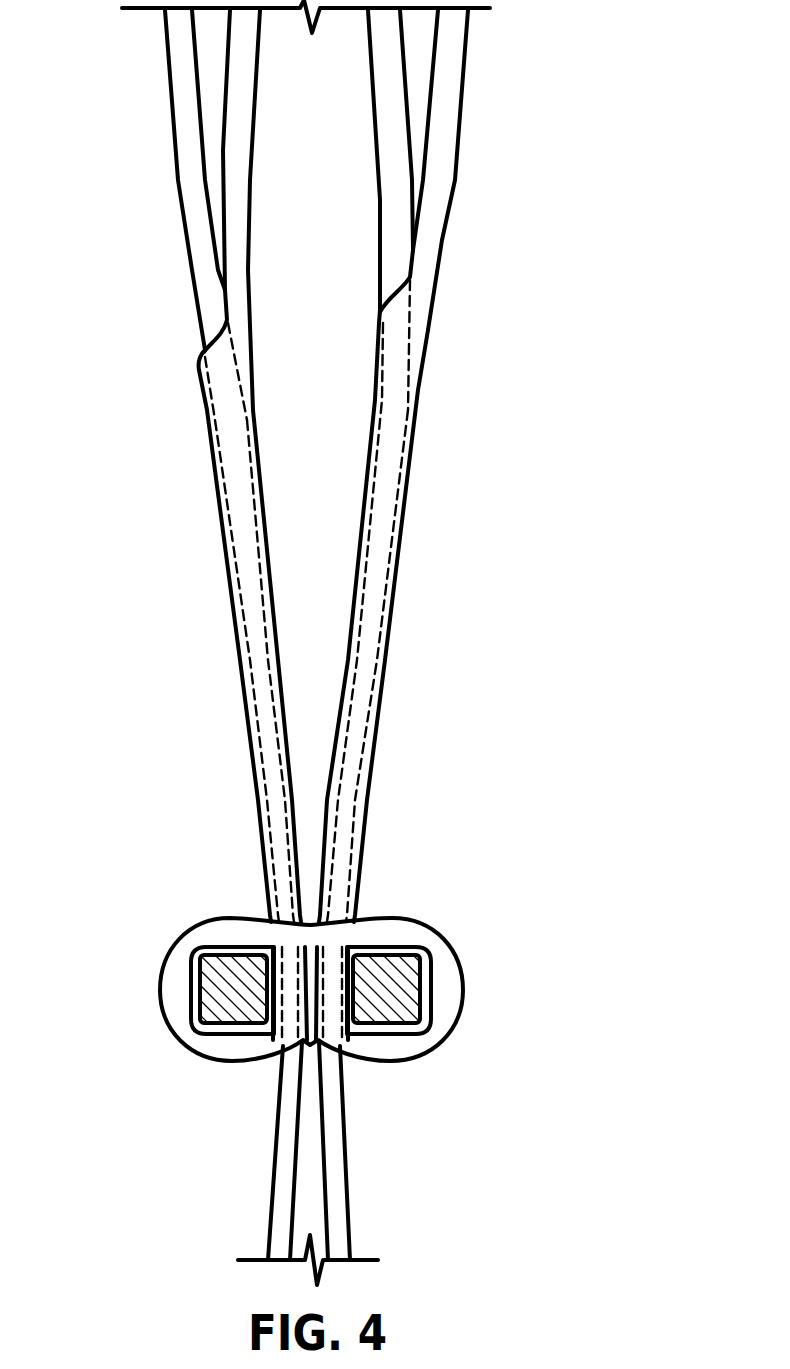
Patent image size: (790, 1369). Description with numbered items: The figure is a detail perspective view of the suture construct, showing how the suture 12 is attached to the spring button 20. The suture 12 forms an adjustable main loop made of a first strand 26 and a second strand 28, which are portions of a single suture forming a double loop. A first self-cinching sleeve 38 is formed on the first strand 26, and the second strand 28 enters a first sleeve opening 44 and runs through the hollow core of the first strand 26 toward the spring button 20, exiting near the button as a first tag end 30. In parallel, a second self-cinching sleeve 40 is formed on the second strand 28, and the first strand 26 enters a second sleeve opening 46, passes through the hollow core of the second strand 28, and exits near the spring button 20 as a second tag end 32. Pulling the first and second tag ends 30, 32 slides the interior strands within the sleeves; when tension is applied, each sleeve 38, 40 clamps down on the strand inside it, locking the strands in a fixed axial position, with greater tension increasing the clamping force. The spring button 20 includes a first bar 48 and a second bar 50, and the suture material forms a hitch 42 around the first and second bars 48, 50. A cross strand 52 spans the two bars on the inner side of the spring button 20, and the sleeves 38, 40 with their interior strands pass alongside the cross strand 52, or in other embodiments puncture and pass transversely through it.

The suture 12 is at (611, 277).
The spring button 20 is at (185, 923).
The first strand 26 is at (374, 100).
The second strand 28 is at (459, 142).
The first tag end 30 is at (279, 1163).
The second tag end 32 is at (343, 1180).
The first self-cinching sleeve 38 is at (176, 687).
The second self-cinching sleeve 40 is at (466, 659).
The hitch 42 is at (446, 932).
The first sleeve opening 44 is at (178, 347).
The second sleeve opening 46 is at (362, 302).
The first bar 48 is at (217, 1002).
The second bar 50 is at (408, 1005).
The cross strand 52 is at (310, 917).